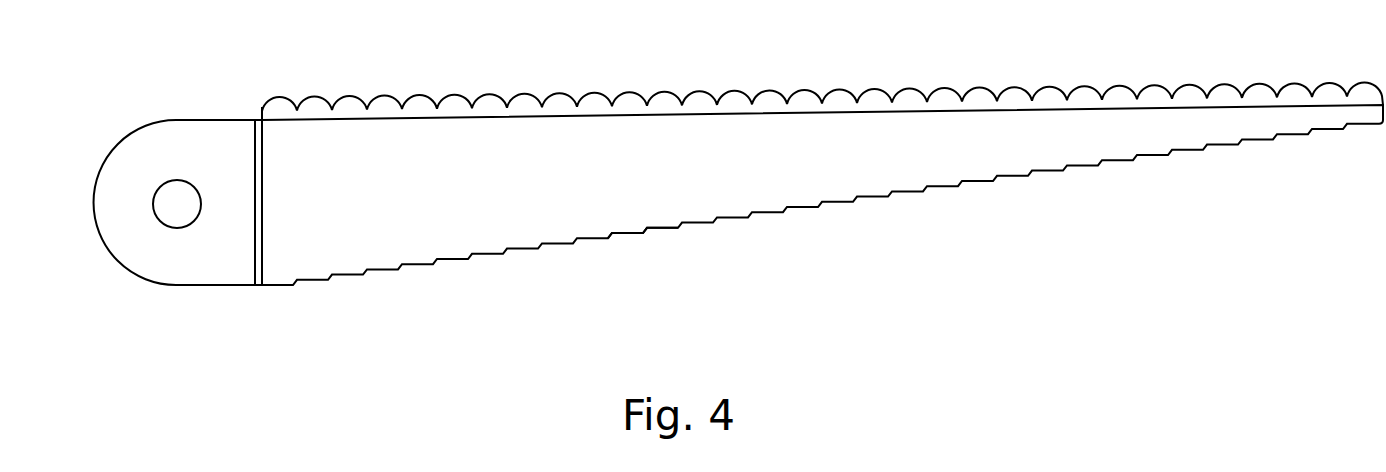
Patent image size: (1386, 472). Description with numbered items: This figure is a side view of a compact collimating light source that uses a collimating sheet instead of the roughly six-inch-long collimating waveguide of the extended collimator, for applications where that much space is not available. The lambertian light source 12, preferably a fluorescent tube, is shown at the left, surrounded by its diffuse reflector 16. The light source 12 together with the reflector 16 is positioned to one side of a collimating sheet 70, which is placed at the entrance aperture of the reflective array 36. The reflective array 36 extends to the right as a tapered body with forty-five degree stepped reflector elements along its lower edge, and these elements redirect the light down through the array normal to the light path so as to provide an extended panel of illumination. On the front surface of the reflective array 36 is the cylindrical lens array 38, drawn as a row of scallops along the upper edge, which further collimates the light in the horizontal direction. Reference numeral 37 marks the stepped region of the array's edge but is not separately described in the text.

The light source 12 is at (177, 188).
The reflector 16 is at (210, 120).
The reflective array 36 is at (463, 238).
The teeth 37 is at (643, 228).
The cylindrical lens array 38 is at (528, 90).
The collimating sheet 70 is at (254, 250).